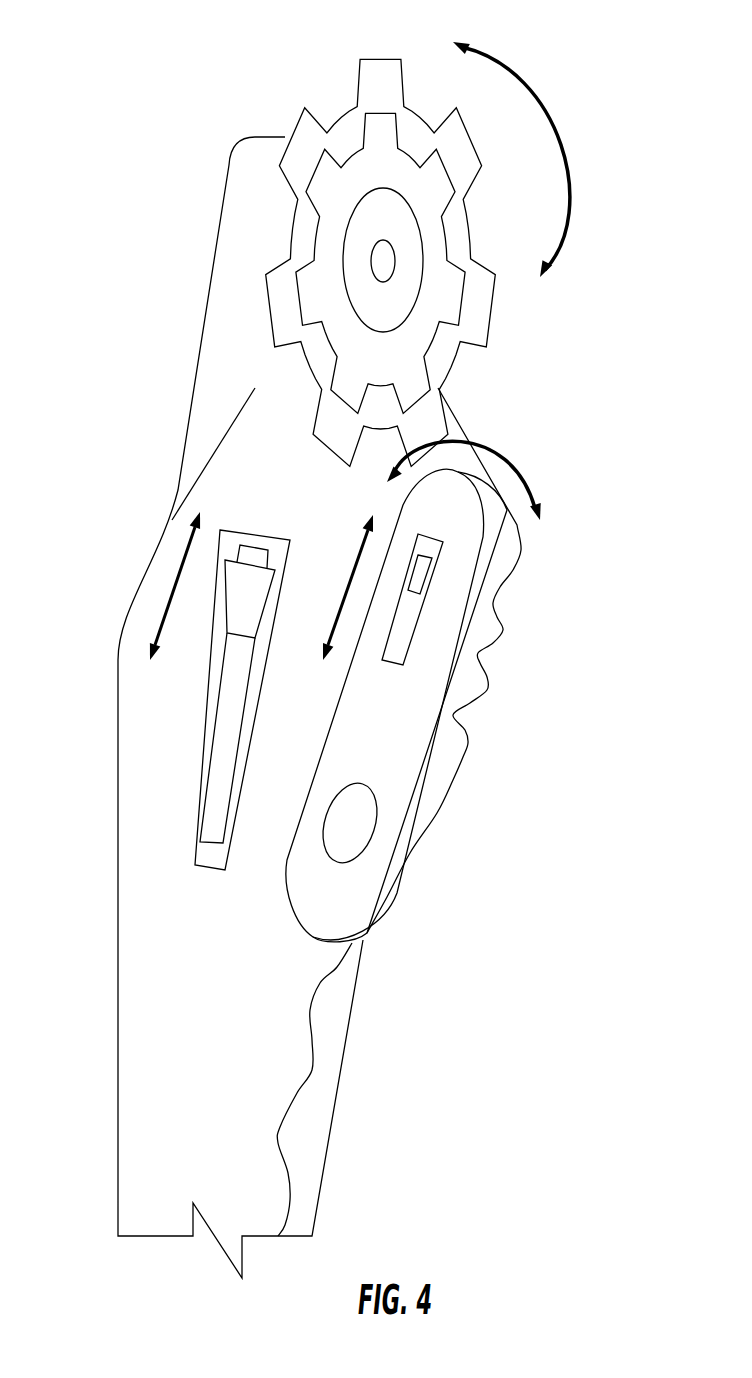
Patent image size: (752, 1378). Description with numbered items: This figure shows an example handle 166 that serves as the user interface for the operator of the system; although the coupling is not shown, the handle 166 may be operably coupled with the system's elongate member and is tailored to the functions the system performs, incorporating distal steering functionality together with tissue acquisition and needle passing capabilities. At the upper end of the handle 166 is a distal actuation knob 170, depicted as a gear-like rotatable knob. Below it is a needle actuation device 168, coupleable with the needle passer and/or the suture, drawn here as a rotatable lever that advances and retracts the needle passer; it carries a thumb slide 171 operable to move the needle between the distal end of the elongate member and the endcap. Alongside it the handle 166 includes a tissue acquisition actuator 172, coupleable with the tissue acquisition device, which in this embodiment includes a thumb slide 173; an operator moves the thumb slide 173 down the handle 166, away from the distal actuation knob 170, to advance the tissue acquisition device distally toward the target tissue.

The handle 166 is at (103, 155).
The distal actuation knob 170 is at (520, 334).
The needle actuation device 168 is at (430, 747).
The thumb slide 171 is at (425, 573).
The tissue acquisition actuator 172 is at (218, 797).
The thumb slide 173 is at (247, 610).